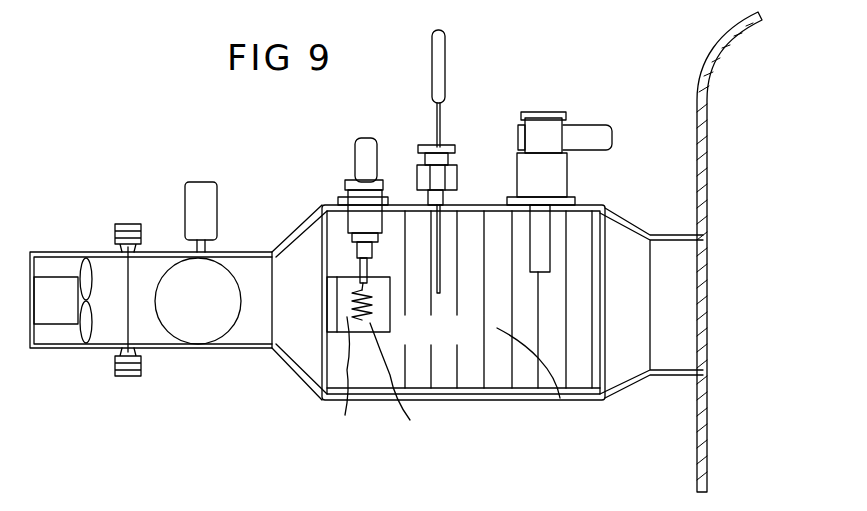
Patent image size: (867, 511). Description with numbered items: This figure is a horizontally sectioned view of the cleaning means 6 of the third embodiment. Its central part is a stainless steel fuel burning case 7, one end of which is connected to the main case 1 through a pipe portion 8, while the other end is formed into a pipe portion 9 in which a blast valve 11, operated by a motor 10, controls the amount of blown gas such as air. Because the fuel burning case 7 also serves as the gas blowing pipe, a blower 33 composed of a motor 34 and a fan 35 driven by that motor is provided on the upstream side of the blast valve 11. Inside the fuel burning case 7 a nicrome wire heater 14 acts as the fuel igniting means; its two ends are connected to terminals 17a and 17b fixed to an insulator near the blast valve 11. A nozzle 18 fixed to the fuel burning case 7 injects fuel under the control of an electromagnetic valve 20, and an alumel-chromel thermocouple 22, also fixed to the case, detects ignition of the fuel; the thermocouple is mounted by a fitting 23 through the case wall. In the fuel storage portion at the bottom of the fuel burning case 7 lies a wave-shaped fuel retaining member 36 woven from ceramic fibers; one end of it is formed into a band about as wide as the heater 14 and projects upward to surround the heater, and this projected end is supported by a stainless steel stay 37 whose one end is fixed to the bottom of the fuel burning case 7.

The main case 1 is at (740, 18).
The cleaning means 6 is at (458, 405).
The fuel burning case 7 is at (513, 402).
The pipe portion 8 is at (678, 233).
The pipe portion 9 is at (257, 252).
The motor 10 is at (200, 228).
The blast valve 11 is at (195, 330).
The nicrome wire heater 14 is at (412, 386).
The terminal 17a is at (405, 310).
The terminal 17b is at (400, 314).
The nozzle 18 is at (540, 247).
The electromagnetic valve 20 is at (547, 177).
The alumel-chromel thermocouple 22 is at (440, 250).
The mounting nut 23 is at (440, 160).
The blower 33 is at (50, 273).
The motor 34 is at (55, 313).
The fan 35 is at (90, 263).
The fuel retaining member 36 is at (560, 398).
The stay 37 is at (359, 383).